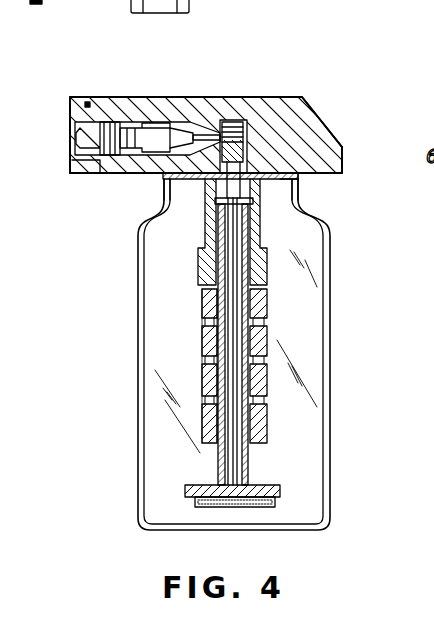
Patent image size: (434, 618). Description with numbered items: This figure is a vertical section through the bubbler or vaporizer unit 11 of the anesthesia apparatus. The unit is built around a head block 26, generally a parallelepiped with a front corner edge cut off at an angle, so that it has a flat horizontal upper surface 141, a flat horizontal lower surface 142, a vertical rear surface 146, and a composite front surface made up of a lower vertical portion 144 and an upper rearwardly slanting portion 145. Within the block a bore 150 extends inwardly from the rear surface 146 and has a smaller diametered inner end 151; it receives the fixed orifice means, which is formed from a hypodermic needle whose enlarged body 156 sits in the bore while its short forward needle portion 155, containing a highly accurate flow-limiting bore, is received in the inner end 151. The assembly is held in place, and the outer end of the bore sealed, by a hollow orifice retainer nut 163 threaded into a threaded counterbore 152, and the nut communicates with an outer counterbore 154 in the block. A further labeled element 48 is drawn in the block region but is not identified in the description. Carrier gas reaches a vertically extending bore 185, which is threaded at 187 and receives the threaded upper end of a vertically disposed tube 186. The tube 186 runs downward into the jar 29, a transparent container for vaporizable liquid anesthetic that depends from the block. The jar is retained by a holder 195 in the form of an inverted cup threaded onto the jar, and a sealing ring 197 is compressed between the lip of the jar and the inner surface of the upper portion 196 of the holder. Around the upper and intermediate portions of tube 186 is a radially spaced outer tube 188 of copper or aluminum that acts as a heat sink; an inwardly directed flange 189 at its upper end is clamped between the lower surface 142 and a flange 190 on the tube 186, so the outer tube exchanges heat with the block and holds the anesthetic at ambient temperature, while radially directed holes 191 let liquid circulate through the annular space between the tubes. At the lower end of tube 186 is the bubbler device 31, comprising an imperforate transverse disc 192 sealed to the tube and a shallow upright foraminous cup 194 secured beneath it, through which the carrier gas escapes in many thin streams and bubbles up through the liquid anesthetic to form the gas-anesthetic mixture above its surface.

The bubbler or vaporizer unit 11 is at (250, 87).
The head block 26 is at (288, 112).
The jar 29 is at (330, 379).
The bubbler device 31 is at (182, 508).
The threaded cap 48 is at (166, 110).
The upper surface 141 is at (277, 97).
The lower surface 142 is at (141, 179).
The lower vertical portion 144 is at (344, 155).
The upper rearwardly slanting portion 145 is at (345, 127).
The rear surface 146 is at (93, 165).
The bore 150 is at (142, 120).
The smaller diametered inner end 151 is at (205, 134).
The threaded counterbore 152 is at (108, 123).
The outer counterbore 154 is at (88, 173).
The forward needle portion 155 is at (186, 180).
The enlarged body 156 is at (166, 136).
The orifice retainer nut 163 is at (70, 120).
The vertically extending bore 185 is at (335, 126).
The tube 186 is at (250, 326).
The threads 187 is at (247, 143).
The tube 188 is at (208, 268).
The inwardly directed flange 189 is at (252, 188).
The flange 190 is at (215, 236).
The radially directed holes 191 is at (205, 327).
The imperforate transverse disc 192 is at (260, 487).
The foraminous cup 194 is at (248, 507).
The holder 195 is at (310, 202).
The upper portion 196 is at (298, 192).
The sealing ring 197 is at (290, 178).